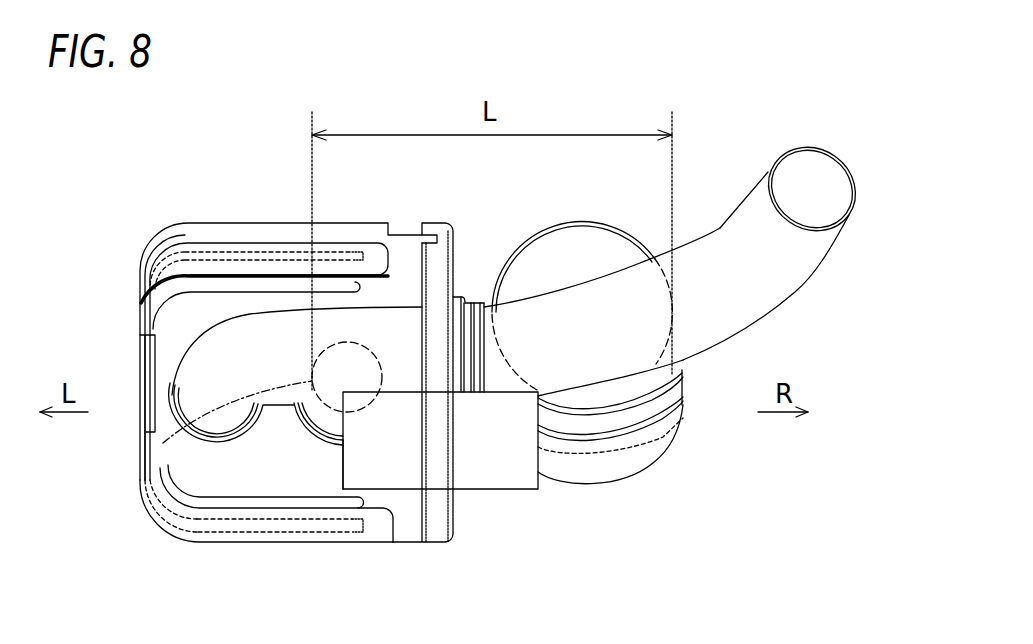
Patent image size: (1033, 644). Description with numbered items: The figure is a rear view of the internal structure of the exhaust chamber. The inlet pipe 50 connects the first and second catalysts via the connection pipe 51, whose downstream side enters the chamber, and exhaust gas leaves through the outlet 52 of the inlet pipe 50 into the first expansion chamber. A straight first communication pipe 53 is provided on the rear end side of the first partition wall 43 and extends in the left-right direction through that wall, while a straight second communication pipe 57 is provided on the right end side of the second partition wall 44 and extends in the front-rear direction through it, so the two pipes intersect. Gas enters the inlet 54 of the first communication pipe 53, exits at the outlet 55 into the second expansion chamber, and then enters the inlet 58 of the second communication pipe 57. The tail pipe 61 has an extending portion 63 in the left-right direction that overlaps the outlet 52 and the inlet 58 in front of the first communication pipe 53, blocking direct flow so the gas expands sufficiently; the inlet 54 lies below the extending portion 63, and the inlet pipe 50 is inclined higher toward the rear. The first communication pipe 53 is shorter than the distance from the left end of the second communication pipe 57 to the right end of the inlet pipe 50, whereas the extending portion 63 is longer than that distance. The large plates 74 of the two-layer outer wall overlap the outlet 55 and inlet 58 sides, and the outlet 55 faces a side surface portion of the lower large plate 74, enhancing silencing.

The first partition wall 43 is at (437, 224).
The second partition wall 44 is at (140, 362).
The inlet pipe 50 is at (693, 373).
The connection pipe 51 is at (687, 425).
The outlet of the inlet pipe 52 is at (598, 240).
The first communication pipe 53 is at (497, 482).
The inlet of the first communication pipe 54 is at (540, 467).
The outlet of the first communication pipe 55 is at (343, 465).
The second communication pipe 57 is at (327, 420).
The inlet of the second communication pipe 58 is at (163, 445).
The tail pipe 61 is at (717, 230).
The extending portion of the tail pipe in the left-right direction 63 is at (555, 300).
The large plate 74 is at (167, 268).